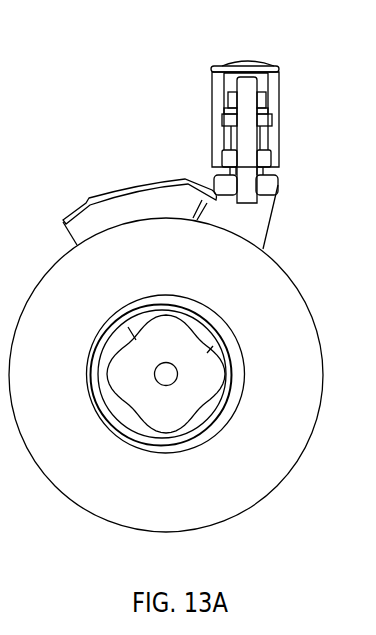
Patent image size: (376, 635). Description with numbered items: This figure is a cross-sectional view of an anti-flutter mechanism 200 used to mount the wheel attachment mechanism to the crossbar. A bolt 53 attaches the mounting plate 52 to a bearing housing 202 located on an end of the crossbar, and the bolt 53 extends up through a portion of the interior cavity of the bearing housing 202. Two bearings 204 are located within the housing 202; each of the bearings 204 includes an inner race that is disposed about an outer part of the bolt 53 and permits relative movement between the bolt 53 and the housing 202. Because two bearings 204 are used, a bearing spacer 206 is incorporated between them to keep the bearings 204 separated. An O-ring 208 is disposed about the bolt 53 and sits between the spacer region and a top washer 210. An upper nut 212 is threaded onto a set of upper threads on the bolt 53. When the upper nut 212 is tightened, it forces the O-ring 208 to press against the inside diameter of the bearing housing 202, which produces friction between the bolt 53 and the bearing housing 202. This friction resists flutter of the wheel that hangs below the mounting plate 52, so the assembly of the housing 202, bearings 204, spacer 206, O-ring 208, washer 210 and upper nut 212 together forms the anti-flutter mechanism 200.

The anti-flutter mechanism 200 is at (120, 71).
The bearing housing 202 is at (215, 89).
The bearings 204 is at (272, 116).
The bearing spacer 206 is at (263, 140).
The O-ring 208 is at (230, 108).
The top washer 210 is at (268, 105).
The upper nut 212 is at (263, 100).
The mounting plate 52 is at (213, 176).
The bolt 53 is at (248, 185).